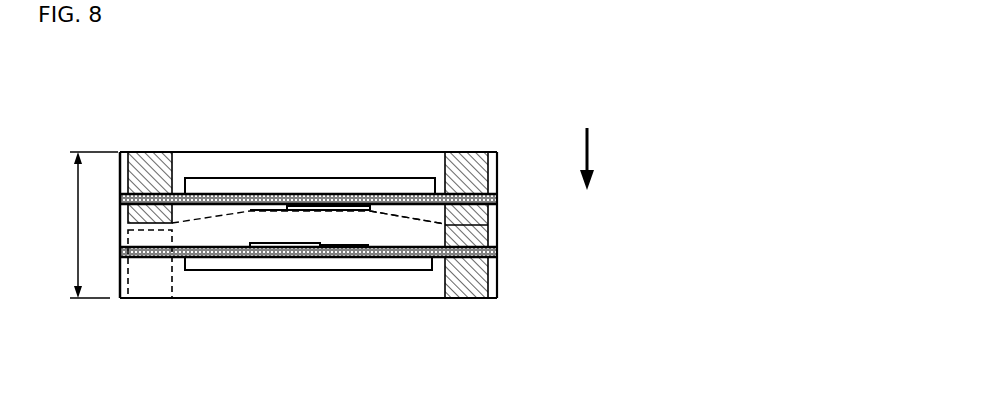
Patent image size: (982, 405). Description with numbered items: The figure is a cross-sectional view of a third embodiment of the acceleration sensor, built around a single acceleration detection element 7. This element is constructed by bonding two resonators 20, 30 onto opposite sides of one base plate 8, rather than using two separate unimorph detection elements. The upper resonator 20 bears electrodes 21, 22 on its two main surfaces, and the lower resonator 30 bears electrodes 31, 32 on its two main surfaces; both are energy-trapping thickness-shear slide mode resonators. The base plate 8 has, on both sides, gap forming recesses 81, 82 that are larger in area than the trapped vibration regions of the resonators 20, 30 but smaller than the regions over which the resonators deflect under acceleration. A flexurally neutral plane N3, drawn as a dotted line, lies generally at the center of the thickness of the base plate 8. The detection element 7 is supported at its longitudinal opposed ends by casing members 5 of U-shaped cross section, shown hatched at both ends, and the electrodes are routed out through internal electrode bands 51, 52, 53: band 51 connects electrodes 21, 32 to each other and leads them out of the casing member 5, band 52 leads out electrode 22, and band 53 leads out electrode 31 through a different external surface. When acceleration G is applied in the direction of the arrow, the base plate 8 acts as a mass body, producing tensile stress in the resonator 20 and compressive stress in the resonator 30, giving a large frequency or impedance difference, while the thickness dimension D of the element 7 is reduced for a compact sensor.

The casing member 5 is at (330, 162).
The acceleration detection element 7 is at (508, 197).
The base plate 8 is at (417, 233).
The resonator 20 is at (236, 196).
The electrode 21 is at (388, 202).
The electrode 22 is at (200, 196).
The resonator 30 is at (248, 258).
The electrode 31 is at (213, 258).
The electrode 32 is at (390, 258).
The internal electrode band 51 is at (470, 153).
The internal electrode band 52 is at (143, 152).
The internal electrode band 53 is at (116, 292).
The gap forming recess 81 is at (288, 203).
The gap forming recess 82 is at (320, 250).
The flexurally neutral plane N3 is at (413, 218).
The thickness dimension D is at (86, 225).
The acceleration G is at (587, 143).